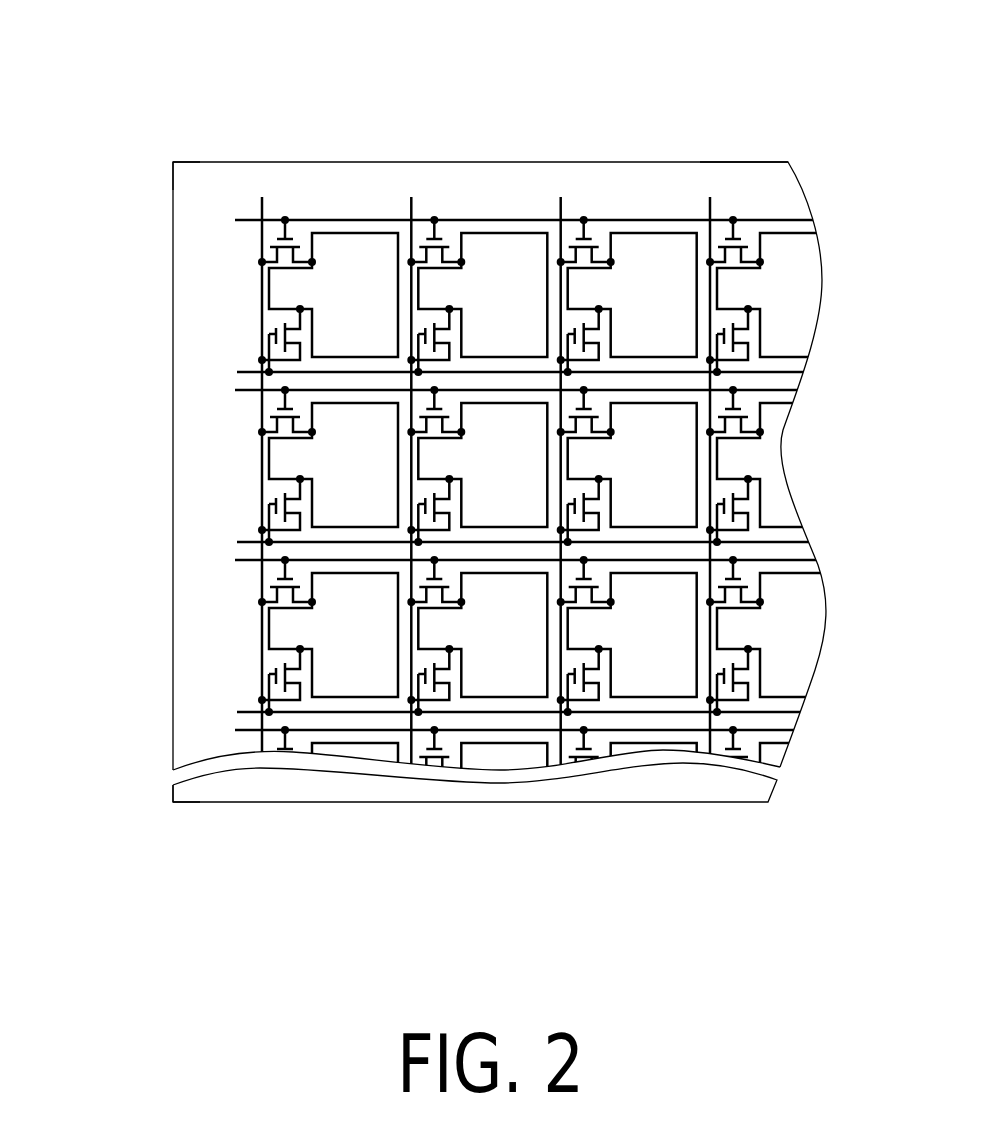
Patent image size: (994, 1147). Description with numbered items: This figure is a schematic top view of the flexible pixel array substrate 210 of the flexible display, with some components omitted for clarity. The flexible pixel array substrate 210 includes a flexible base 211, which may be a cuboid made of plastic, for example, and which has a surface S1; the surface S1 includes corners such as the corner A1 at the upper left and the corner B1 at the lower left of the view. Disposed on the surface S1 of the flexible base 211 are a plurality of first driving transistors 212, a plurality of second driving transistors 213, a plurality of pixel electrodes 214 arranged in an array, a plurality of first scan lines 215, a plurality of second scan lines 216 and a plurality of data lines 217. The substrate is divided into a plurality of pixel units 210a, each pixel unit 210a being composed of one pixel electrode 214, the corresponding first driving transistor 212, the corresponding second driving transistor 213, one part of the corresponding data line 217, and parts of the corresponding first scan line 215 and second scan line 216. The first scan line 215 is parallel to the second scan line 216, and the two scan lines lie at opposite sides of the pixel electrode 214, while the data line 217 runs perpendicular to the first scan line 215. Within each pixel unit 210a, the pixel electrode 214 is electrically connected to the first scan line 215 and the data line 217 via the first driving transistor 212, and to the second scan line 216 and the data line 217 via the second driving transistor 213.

The flexible pixel array substrate 210 is at (450, 486).
The pixel unit 210a is at (365, 214).
The flexible base 211 is at (188, 512).
The first driving transistor 212 is at (312, 228).
The second driving transistor 213 is at (258, 303).
The pixel electrode 214 is at (381, 243).
The first scan line 215 is at (243, 219).
The second scan line 216 is at (238, 372).
The data line 217 is at (260, 243).
The corner A1 is at (167, 143).
The corner B1 is at (168, 823).
The surface S1 is at (765, 177).